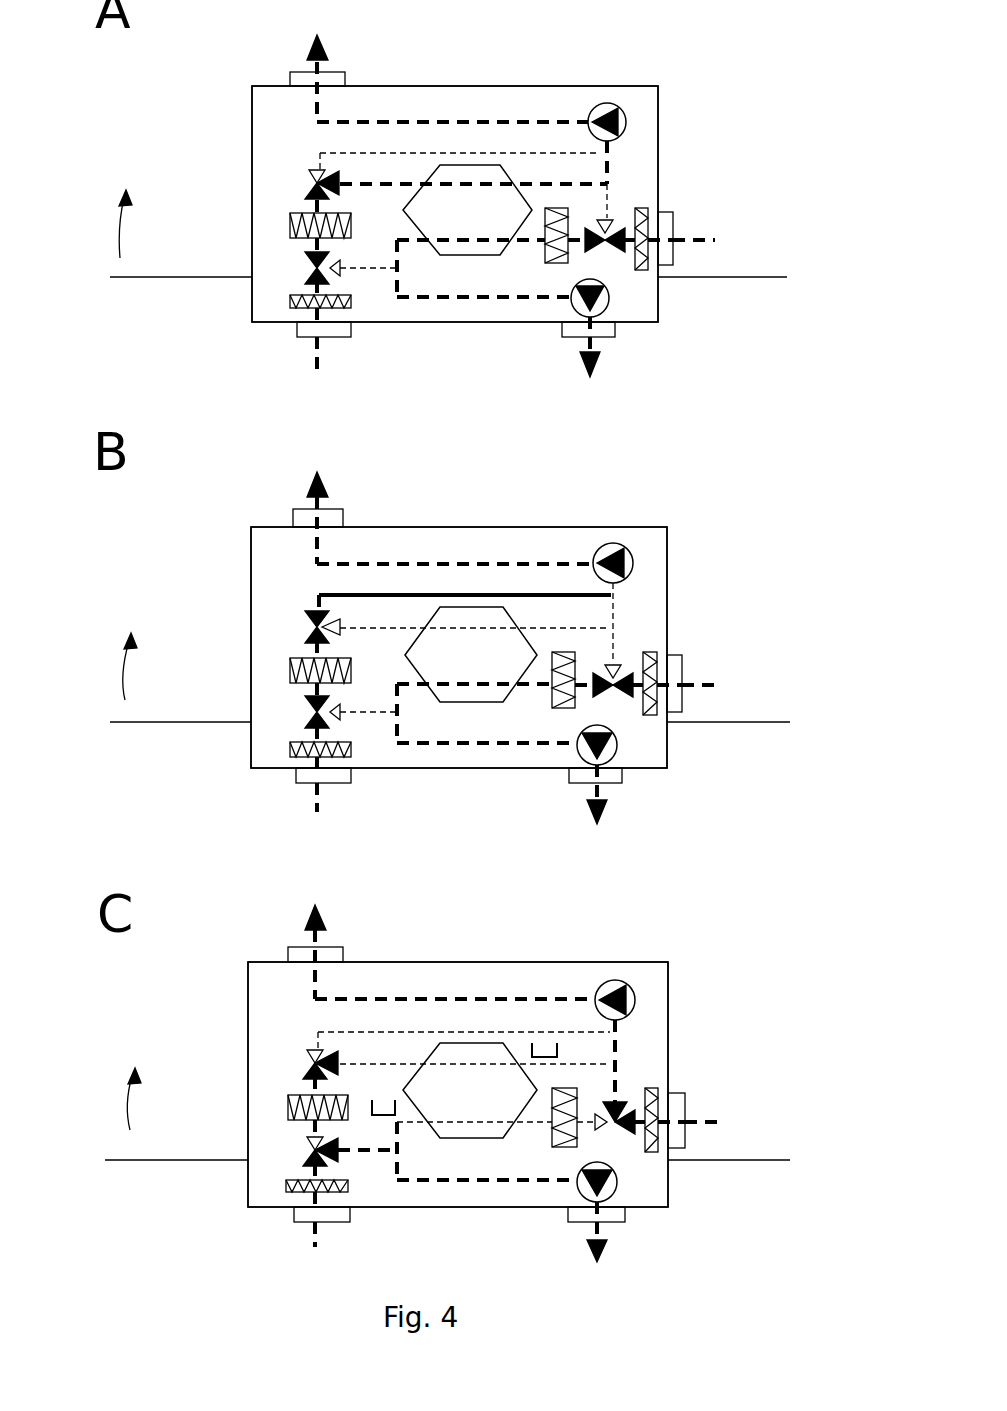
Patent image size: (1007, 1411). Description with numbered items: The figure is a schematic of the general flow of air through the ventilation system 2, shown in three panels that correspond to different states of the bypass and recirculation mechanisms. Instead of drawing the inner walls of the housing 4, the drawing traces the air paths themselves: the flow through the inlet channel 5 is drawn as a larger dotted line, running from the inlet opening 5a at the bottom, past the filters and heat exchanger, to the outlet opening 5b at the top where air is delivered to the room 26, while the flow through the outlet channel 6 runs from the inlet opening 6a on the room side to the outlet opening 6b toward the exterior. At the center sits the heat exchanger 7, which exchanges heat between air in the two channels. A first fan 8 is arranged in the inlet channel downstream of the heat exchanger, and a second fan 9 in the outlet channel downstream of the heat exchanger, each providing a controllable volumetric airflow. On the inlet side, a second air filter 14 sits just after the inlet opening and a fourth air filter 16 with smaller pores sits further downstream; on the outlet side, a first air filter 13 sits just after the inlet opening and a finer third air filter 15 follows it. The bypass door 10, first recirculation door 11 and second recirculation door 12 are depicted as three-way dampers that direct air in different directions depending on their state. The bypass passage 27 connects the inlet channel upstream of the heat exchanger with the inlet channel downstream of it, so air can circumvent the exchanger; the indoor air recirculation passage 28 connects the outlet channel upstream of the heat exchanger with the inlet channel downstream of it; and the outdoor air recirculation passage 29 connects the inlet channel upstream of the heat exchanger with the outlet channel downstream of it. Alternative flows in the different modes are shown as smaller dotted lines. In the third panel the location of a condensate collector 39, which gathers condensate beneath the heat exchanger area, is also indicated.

The ventilation system 2 is at (242, 118).
The housing 4 is at (658, 140).
The inlet channel 5 is at (316, 370).
The inlet opening of the inlet channel 5a is at (332, 332).
The outlet opening of the inlet channel 5b is at (330, 80).
The outlet channel 6 is at (712, 240).
The inlet opening of the outlet channel 6a is at (666, 228).
The outlet opening of the outlet channel 6b is at (612, 338).
The heat exchanger 7 is at (490, 165).
The first fan 8 is at (621, 108).
The second fan 9 is at (609, 305).
The bypass door 10 is at (312, 185).
The first recirculation door 11 is at (620, 250).
The second recirculation door 12 is at (312, 270).
The first air filter 13 is at (646, 252).
The second air filter 14 is at (292, 303).
The third air filter 15 is at (550, 264).
The fourth air filter 16 is at (290, 226).
The room 26 is at (447, 655).
The bypass passage 27 is at (410, 152).
The indoor air recirculation passage 28 is at (608, 216).
The outdoor air recirculation passage 29 is at (364, 270).
The condensate collector 39 is at (539, 1043).